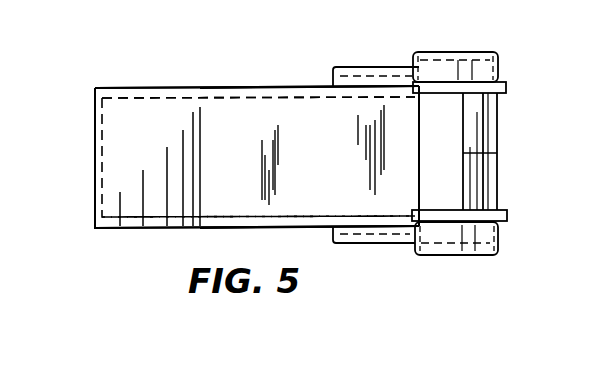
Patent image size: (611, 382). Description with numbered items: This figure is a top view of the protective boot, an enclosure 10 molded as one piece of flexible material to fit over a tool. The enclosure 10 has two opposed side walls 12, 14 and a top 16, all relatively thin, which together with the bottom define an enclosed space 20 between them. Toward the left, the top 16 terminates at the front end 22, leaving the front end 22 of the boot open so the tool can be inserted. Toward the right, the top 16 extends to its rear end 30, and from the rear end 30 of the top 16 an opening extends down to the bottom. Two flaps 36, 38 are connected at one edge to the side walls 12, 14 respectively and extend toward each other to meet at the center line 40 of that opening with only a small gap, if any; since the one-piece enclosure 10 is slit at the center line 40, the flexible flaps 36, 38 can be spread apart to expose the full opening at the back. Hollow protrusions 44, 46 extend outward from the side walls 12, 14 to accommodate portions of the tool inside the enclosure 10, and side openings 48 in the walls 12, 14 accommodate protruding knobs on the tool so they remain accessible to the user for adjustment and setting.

The enclosure 10 is at (302, 66).
The side wall 12 is at (129, 87).
The side wall 14 is at (117, 229).
The top 16 is at (326, 147).
The enclosed space 20 is at (212, 110).
The front end 22 is at (95, 190).
The rear end of the top 30 is at (442, 138).
The flap 36 is at (496, 120).
The flap 38 is at (500, 182).
The center line 40 is at (498, 155).
The hollow protrusion 44 is at (478, 52).
The hollow protrusion 46 is at (380, 66).
The side opening 48 is at (236, 89).